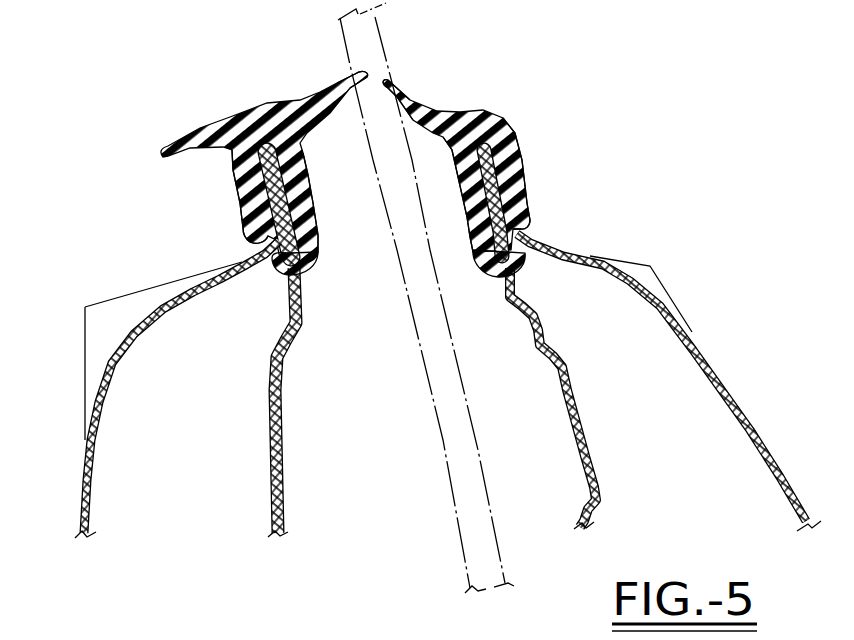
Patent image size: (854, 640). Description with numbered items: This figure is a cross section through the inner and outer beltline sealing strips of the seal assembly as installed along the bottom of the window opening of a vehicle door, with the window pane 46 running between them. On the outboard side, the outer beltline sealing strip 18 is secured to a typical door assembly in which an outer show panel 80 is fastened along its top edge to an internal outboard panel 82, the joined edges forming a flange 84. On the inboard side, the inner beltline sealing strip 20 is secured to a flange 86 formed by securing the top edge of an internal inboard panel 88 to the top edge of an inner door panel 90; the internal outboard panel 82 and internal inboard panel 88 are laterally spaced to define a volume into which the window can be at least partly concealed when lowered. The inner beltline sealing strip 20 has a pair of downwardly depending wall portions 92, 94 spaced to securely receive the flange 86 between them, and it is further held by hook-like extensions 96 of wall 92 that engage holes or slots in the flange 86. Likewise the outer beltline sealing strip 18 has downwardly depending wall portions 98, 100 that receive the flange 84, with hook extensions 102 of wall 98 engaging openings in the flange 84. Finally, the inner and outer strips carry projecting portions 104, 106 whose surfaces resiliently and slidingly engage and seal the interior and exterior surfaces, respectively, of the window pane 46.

The outer beltline sealing strip 18 is at (497, 112).
The inner beltline sealing strip 20 is at (257, 127).
The window pane 46 is at (472, 510).
The outer show panel 80 is at (743, 413).
The internal outboard panel 82 is at (585, 443).
The flange 84 is at (484, 178).
The flange 86 is at (283, 208).
The internal inboard panel 88 is at (277, 370).
The inner door panel 90 is at (87, 473).
The wall portion 92 is at (307, 190).
The wall portion 94 is at (247, 190).
The hook-like extension 96 is at (287, 267).
The wall portion 98 is at (480, 208).
The wall portion 100 is at (517, 165).
The hook extension 102 is at (516, 261).
The projecting portion 104 is at (338, 90).
The projecting portion 106 is at (395, 93).